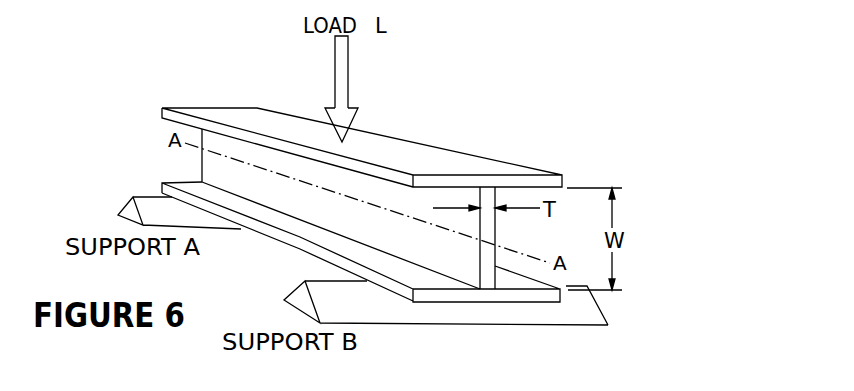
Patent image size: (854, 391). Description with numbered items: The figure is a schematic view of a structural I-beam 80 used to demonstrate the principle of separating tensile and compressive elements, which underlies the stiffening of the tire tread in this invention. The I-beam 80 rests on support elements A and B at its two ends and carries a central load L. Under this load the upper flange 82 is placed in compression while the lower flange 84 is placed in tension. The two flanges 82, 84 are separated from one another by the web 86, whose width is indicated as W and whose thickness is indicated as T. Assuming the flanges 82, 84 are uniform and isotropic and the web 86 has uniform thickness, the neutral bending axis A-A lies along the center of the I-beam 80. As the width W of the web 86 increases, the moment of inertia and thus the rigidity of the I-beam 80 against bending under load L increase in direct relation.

The structural I-beam 80 is at (448, 120).
The upper flange 82 is at (458, 180).
The lower flange 84 is at (518, 297).
The web 86 is at (483, 262).